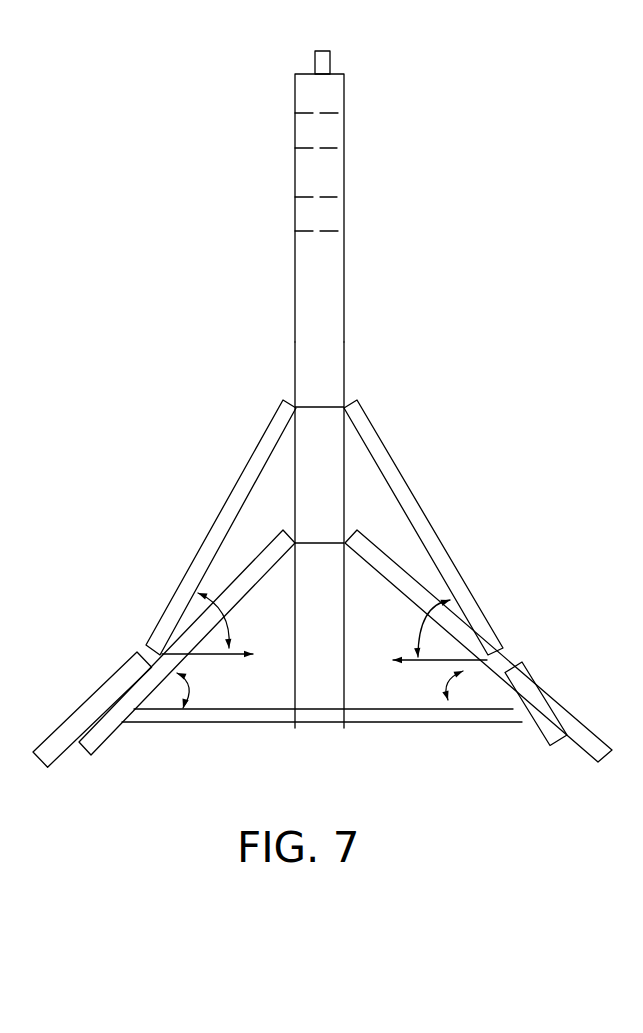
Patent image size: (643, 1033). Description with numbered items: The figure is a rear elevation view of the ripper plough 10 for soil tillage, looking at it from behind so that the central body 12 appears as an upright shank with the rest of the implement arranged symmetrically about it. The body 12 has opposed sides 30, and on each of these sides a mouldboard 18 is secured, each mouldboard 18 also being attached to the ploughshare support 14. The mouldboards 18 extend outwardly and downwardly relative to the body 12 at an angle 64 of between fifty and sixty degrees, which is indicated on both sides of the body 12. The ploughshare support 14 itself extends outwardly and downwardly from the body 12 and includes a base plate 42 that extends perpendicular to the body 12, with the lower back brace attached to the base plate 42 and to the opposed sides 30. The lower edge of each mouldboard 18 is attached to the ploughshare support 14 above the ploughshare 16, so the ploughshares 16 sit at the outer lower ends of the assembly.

The ripper plough 10 is at (326, 423).
The body 12 is at (295, 278).
The opposed sides 30 is at (295, 342).
The mouldboards 18 is at (262, 432).
The angle 64 is at (222, 612).
The ploughshares 16 is at (547, 708).
The ploughshare support 14 is at (513, 702).
The base plate 42 is at (227, 717).